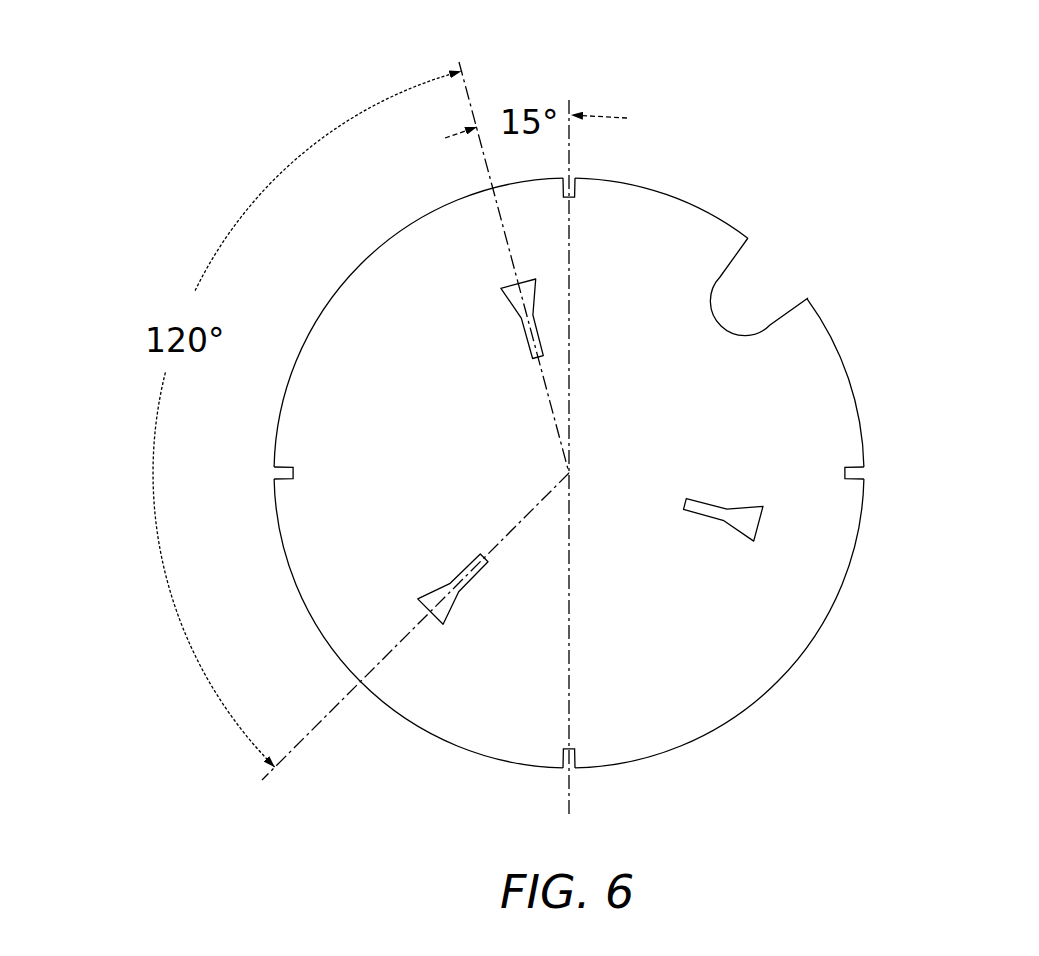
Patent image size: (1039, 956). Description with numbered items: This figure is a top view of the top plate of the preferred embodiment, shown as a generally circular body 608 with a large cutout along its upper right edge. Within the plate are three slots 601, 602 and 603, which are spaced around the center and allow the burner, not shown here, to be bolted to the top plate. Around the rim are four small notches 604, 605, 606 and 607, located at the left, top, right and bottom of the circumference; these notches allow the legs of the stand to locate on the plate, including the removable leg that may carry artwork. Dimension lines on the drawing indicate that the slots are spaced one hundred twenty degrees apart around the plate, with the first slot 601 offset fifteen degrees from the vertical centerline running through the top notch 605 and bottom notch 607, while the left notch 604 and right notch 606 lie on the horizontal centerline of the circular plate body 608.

The slot 601 is at (503, 285).
The slot 602 is at (765, 492).
The slot 603 is at (450, 625).
The notch 604 is at (268, 477).
The notch 605 is at (584, 172).
The notch 606 is at (876, 477).
The notch 607 is at (573, 775).
The circular disc body 608 is at (733, 740).